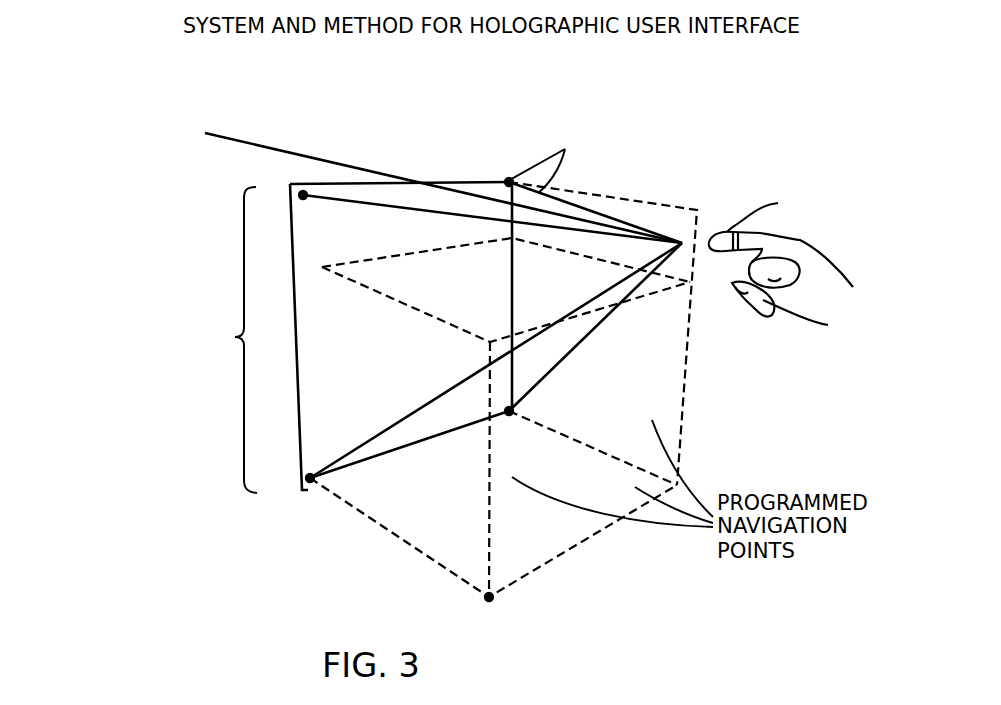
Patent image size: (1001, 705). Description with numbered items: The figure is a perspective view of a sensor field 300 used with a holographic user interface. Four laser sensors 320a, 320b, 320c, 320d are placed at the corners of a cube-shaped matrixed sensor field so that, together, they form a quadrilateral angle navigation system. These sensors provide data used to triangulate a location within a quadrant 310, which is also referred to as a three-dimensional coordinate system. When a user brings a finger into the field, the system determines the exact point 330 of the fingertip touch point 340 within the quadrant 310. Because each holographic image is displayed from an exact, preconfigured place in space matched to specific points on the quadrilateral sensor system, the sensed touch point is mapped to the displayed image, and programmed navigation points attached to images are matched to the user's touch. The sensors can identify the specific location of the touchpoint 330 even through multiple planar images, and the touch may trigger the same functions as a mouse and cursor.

The holographic user interface system 300 is at (415, 136).
The quadrant 310 is at (518, 553).
The laser sensor 320a is at (303, 195).
The laser sensor 320b is at (508, 182).
The laser sensor 320c is at (311, 484).
The laser sensor 320d is at (514, 411).
The exact point 330 is at (683, 242).
The fingertip touch point 340 is at (721, 250).